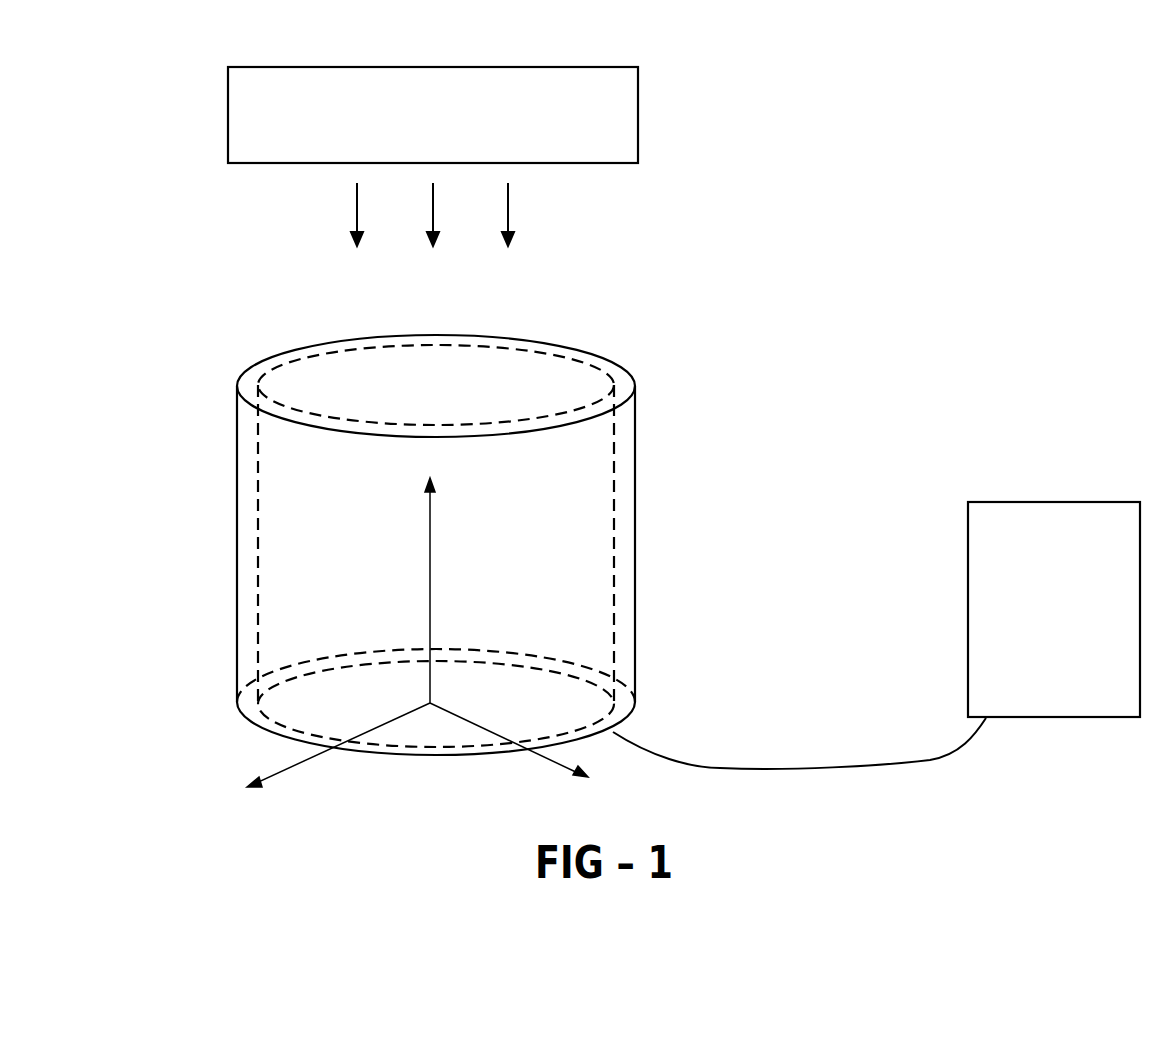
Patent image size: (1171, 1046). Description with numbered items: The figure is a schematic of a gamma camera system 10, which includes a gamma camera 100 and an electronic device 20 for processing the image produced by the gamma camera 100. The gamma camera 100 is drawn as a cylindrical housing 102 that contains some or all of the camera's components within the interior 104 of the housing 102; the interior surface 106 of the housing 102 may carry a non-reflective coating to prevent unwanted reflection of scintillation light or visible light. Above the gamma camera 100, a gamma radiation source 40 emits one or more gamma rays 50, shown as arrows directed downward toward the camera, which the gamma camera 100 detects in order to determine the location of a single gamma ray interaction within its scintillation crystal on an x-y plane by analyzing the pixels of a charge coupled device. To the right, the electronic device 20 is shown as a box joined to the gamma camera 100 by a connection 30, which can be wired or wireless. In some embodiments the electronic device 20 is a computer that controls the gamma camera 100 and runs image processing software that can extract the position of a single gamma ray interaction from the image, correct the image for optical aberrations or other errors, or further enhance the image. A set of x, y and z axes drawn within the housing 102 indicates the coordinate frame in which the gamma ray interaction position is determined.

The gamma camera system 10 is at (1021, 113).
The electronic device 20 is at (1087, 513).
The connection 30 is at (812, 768).
The gamma radiation source 40 is at (634, 150).
The gamma rays 50 is at (548, 221).
The gamma camera 100 is at (698, 391).
The housing 102 is at (636, 535).
The interior 104 is at (349, 499).
The interior surface 106 is at (266, 505).